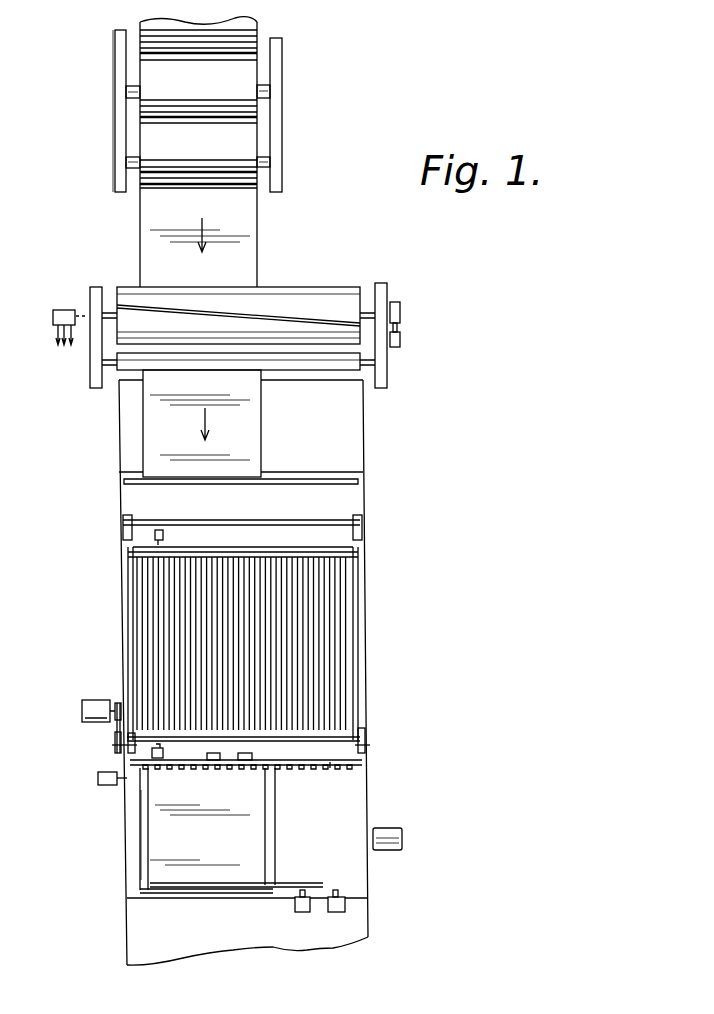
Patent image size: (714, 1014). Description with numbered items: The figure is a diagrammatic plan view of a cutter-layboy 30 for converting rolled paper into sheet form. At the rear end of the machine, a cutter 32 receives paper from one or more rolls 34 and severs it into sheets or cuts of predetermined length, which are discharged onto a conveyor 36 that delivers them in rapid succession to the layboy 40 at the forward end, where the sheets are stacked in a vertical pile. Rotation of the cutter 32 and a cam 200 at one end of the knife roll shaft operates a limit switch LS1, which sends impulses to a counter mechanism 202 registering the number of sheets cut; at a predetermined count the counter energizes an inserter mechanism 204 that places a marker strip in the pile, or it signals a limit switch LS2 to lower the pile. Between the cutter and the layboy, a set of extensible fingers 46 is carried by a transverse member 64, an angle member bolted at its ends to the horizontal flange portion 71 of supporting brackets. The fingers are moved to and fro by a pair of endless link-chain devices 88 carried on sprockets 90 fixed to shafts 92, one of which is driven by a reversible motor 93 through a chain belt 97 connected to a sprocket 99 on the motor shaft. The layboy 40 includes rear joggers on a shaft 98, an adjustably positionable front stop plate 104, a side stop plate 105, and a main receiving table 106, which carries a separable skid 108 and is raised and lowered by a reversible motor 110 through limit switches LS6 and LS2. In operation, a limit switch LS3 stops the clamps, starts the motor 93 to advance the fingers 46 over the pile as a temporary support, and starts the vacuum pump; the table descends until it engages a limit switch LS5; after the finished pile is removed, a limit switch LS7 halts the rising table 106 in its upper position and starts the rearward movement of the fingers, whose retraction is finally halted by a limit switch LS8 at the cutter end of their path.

The cutter-layboy 30 is at (242, 521).
The cutter 32 is at (332, 287).
The rolls 34 is at (140, 106).
The conveyor 36 is at (365, 466).
The layboy 40 is at (325, 843).
The extensible fingers 46 is at (363, 709).
The transverse member 64 is at (310, 556).
The horizontal flange portion 71 is at (347, 553).
The endless link-chain devices 88 is at (128, 620).
The sprockets 90 is at (112, 748).
The shafts 92 is at (363, 761).
The reversible motor 93 is at (90, 700).
The chain belt 97 is at (110, 722).
The shaft 98 is at (333, 758).
The sprocket 99 is at (112, 700).
The front stop plate 104 is at (243, 898).
The side stop plate 105 is at (140, 803).
The main receiving table 106 is at (368, 903).
The skid 108 is at (165, 898).
The reversible motor 110 is at (390, 826).
The cam 200 is at (400, 305).
The counter mechanism 202 is at (66, 310).
The inserter mechanism 204 is at (97, 778).
The limit switch LS-1 LS1 is at (402, 341).
The limit switch LS-2 LS2 is at (218, 762).
The limit switch LS-3 LS3 is at (164, 753).
The limit switch LS-5 LS5 is at (340, 907).
The limit switch LS-6 LS6 is at (252, 755).
The limit switch LS-7 LS7 is at (307, 912).
The limit switch LS-8 LS8 is at (164, 533).